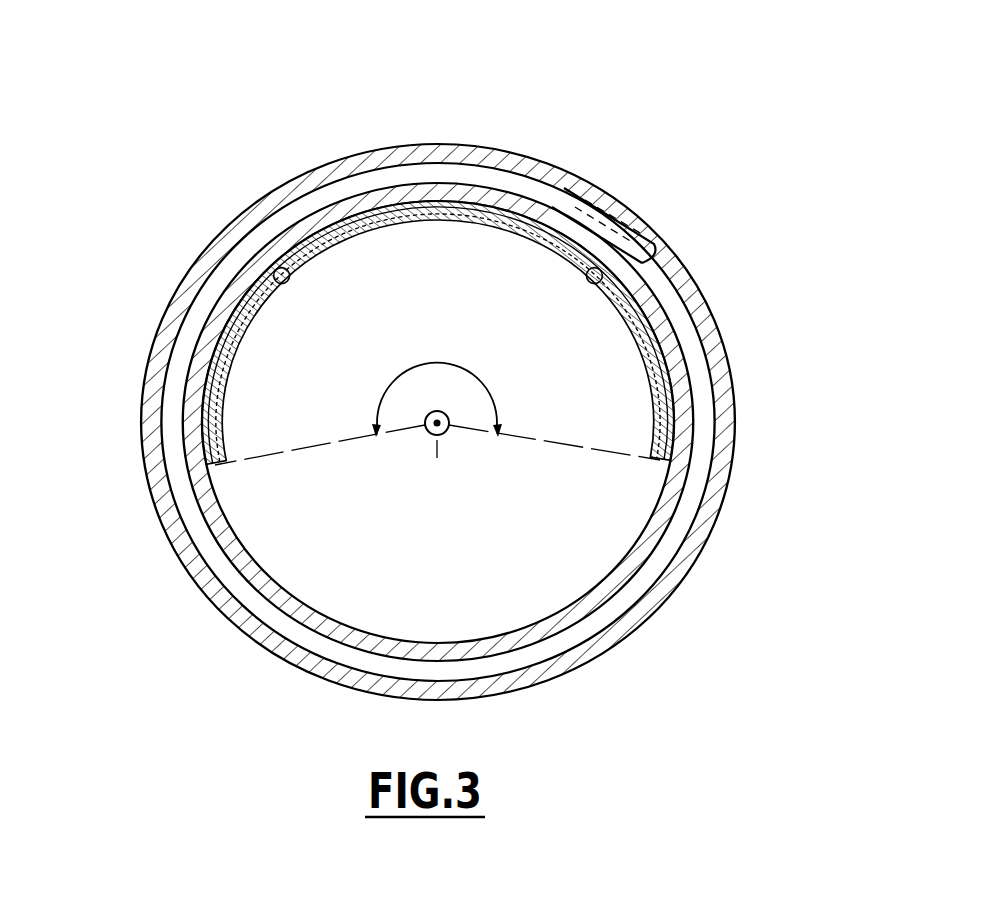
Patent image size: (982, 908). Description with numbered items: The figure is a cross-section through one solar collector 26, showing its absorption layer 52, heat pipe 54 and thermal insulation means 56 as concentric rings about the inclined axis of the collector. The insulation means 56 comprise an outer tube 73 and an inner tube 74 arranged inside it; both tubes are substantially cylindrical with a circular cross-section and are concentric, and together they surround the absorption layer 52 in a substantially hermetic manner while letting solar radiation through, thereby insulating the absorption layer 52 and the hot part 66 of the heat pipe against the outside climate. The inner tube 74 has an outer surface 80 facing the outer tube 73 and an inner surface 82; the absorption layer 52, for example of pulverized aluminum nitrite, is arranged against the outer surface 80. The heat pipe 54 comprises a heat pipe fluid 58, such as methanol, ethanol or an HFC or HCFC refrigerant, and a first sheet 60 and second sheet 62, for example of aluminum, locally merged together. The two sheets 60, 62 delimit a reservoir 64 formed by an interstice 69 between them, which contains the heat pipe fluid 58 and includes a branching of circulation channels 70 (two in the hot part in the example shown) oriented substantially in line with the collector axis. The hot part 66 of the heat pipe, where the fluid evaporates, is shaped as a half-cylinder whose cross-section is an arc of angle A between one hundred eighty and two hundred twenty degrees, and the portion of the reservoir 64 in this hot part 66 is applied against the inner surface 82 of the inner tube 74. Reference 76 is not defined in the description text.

The solar collector 26 is at (728, 162).
The absorption layer 52 is at (386, 392).
The heat pipe 54 is at (448, 230).
The thermal insulation means 56 is at (425, 407).
The heat pipe fluid 58 is at (648, 242).
The first sheet 60 is at (438, 333).
The second sheet 62 is at (438, 333).
The reservoir 64 is at (298, 280).
The hot part 66 is at (438, 333).
The interstice 69 is at (584, 276).
The circulation channels 70 is at (287, 290).
The outer tube 73 is at (425, 407).
The inner tube 74 is at (386, 392).
The outer ring inner surface 76 is at (425, 407).
The outer surface 80 is at (233, 182).
The inner surface 82 is at (570, 215).